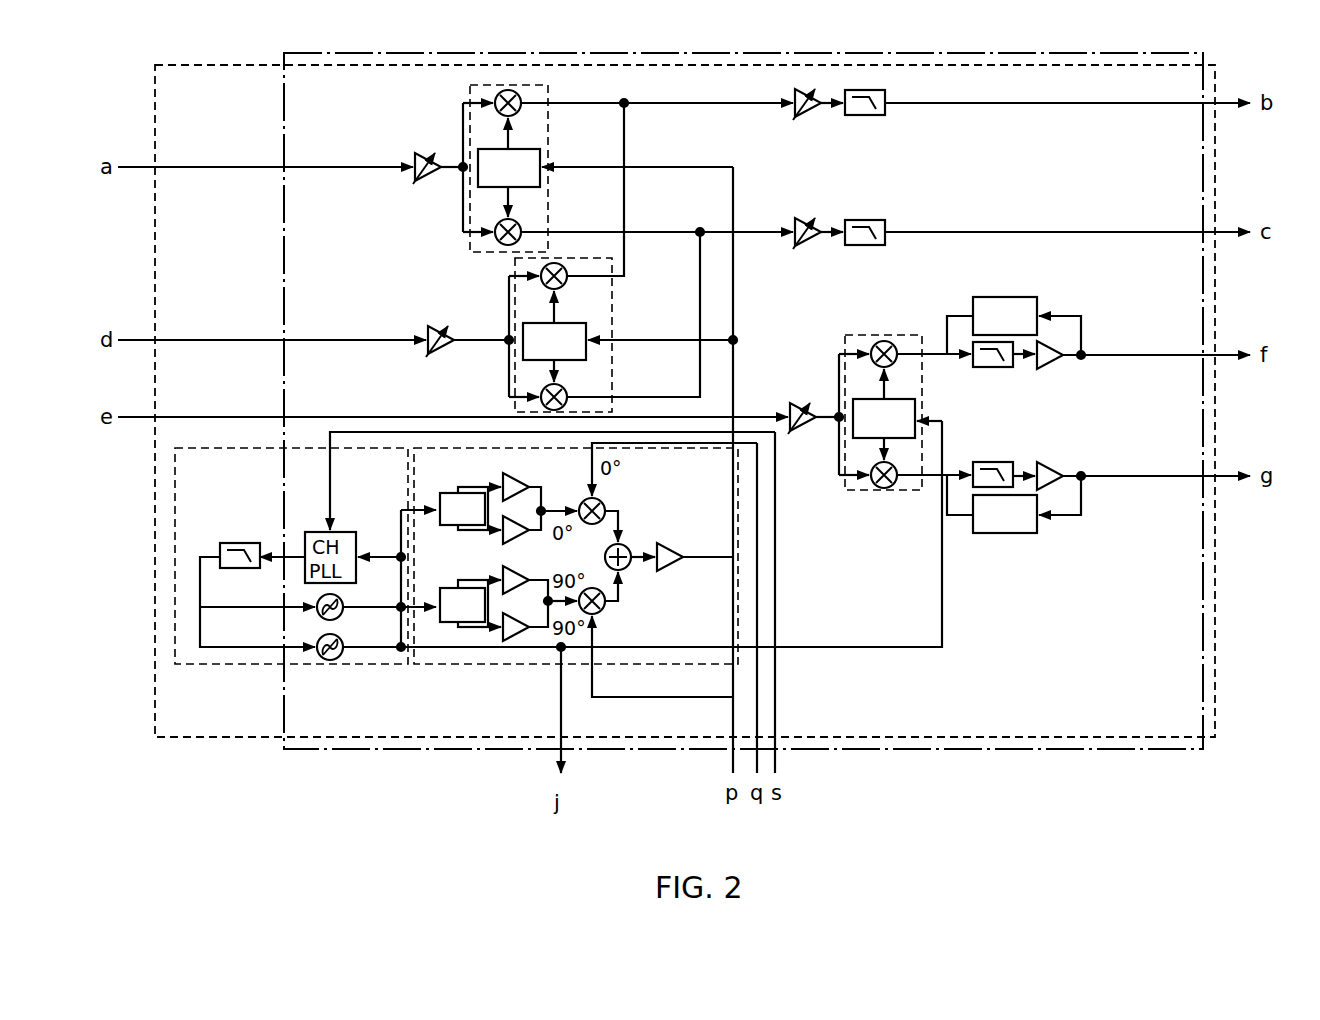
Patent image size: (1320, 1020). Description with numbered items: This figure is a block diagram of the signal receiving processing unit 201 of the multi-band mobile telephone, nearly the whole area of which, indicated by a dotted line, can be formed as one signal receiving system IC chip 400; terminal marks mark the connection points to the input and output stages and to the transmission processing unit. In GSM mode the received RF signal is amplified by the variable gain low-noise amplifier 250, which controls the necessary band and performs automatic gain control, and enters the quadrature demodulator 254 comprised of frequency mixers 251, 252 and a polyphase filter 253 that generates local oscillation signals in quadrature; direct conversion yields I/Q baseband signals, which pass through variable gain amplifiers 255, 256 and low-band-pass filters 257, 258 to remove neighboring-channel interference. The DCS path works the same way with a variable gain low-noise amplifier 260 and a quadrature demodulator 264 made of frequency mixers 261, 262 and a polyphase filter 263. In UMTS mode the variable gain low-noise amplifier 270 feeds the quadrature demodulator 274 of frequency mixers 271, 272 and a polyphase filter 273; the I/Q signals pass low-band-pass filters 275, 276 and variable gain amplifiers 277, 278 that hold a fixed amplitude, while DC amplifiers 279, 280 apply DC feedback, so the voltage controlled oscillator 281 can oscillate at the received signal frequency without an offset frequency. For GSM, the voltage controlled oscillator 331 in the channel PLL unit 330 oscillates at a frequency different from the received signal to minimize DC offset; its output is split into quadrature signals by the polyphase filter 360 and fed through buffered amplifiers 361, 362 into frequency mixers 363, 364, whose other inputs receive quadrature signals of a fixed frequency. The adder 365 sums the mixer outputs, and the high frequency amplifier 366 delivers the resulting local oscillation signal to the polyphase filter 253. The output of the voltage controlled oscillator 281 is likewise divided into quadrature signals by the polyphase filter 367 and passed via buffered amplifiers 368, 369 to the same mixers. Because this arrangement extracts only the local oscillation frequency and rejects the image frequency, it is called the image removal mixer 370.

The signal receiving processing unit 201 is at (1218, 300).
The signal receiving system IC chip 400 is at (1203, 428).
The variable gain low-noise amplifier 250 is at (422, 153).
The frequency mixer 251 is at (521, 97).
The frequency mixer 252 is at (521, 226).
The polyphase filter 253 is at (525, 150).
The quadrature demodulator 254 is at (468, 208).
The variable gain amplifier 255 is at (806, 118).
The variable gain amplifier 256 is at (810, 226).
The low-band-pass filter 257 is at (880, 118).
The low-band-pass filter 258 is at (868, 221).
The variable gain low-noise amplifier 260 is at (436, 324).
The frequency mixer 261 is at (541, 272).
The frequency mixer 262 is at (541, 395).
The polyphase filter 263 is at (590, 321).
The quadrature demodulator 264 is at (513, 380).
The variable gain low-noise amplifier 270 is at (800, 405).
The frequency mixer 271 is at (873, 343).
The frequency mixer 272 is at (873, 487).
The polyphase filter 273 is at (918, 405).
The quadrature demodulator 274 is at (843, 340).
The low-band-pass filter 275 is at (1012, 368).
The low-band-pass filter 276 is at (995, 461).
The variable gain amplifier 277 is at (1058, 370).
The variable gain amplifier 278 is at (1058, 466).
The DC amplifier 279 is at (1005, 296).
The DC amplifier 280 is at (1005, 534).
The voltage controlled oscillator 281 is at (318, 640).
The channel PLL unit 330 is at (320, 668).
The voltage controlled oscillator 331 is at (318, 600).
The polyphase filter 360 is at (460, 492).
The buffered amplifier 361 is at (526, 486).
The buffered amplifier 362 is at (512, 536).
The frequency mixer 363 is at (601, 500).
The frequency mixer 364 is at (601, 612).
The adder 365 is at (630, 548).
The high frequency amplifier 366 is at (672, 568).
The polyphase filter 367 is at (446, 625).
The buffered amplifier 368 is at (518, 572).
The buffered amplifier 369 is at (515, 638).
The image removal mixer 370 is at (488, 668).